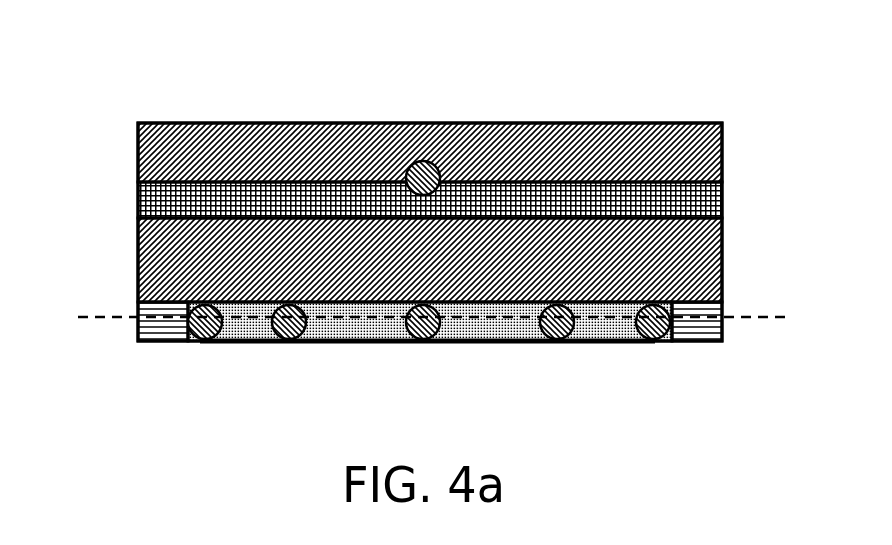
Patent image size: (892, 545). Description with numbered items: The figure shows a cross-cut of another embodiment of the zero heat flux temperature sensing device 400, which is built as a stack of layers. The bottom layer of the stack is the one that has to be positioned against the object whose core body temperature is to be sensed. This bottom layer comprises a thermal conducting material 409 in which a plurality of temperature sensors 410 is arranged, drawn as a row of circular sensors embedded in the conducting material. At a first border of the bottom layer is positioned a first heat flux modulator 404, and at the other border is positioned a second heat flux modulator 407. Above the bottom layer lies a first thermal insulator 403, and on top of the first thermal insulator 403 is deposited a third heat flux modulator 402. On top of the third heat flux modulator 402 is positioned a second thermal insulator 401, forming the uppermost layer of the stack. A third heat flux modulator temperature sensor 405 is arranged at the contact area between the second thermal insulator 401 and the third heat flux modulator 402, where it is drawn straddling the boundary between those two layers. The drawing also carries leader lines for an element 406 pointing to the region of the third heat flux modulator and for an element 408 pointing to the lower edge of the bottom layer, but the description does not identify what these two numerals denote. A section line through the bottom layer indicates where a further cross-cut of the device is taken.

The zero heat flux temperature sensing device 400 is at (425, 210).
The second thermal insulator 401 is at (138, 150).
The third heat flux modulator 402 is at (138, 203).
The first thermal insulator 403 is at (138, 266).
The first heat flux modulator 404 is at (162, 338).
The third heat flux modulator temperature sensor 405 is at (421, 162).
The intermediate layer 406 is at (692, 218).
The second heat flux modulator 407 is at (697, 338).
The bottom conductor 408 is at (603, 343).
The thermal conducting material 409 is at (498, 333).
The temperature sensors 410 is at (295, 343).